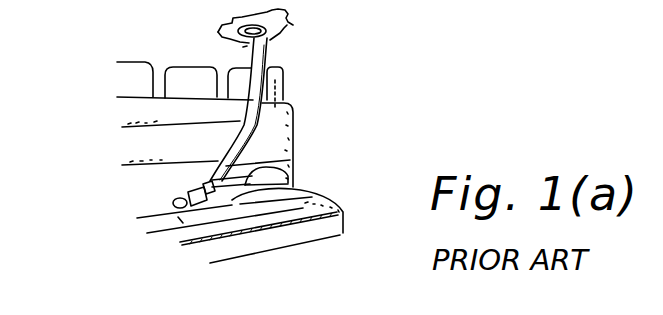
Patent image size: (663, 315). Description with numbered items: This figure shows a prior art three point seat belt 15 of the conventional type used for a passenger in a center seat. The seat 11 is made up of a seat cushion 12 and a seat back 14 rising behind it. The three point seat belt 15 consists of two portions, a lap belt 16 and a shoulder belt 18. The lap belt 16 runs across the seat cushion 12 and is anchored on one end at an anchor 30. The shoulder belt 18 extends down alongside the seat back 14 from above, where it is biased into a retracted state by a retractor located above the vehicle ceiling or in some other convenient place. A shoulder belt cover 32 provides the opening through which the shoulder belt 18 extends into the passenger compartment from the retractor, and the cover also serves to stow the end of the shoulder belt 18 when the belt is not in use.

The seat 11 is at (114, 183).
The seat cushion 12 is at (307, 213).
The seat back 14 is at (268, 115).
The three point seat belt 15 is at (253, 143).
The lap belt 16 is at (292, 172).
The shoulder belt 18 is at (283, 83).
The anchor 30 is at (235, 203).
The shoulder belt cover 32 is at (293, 25).